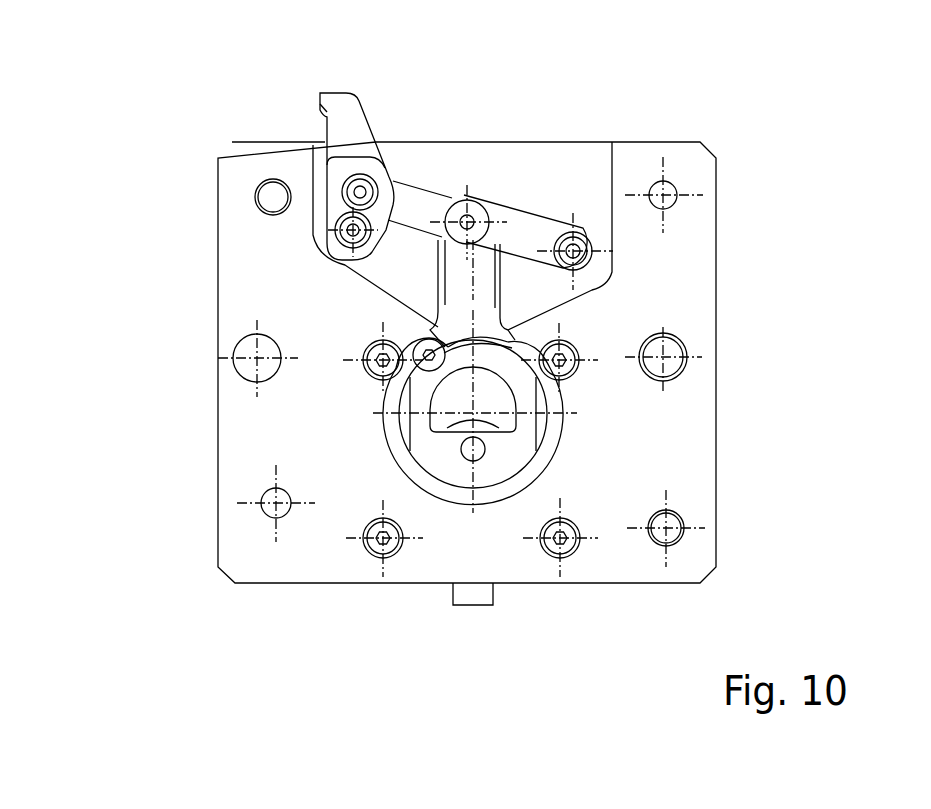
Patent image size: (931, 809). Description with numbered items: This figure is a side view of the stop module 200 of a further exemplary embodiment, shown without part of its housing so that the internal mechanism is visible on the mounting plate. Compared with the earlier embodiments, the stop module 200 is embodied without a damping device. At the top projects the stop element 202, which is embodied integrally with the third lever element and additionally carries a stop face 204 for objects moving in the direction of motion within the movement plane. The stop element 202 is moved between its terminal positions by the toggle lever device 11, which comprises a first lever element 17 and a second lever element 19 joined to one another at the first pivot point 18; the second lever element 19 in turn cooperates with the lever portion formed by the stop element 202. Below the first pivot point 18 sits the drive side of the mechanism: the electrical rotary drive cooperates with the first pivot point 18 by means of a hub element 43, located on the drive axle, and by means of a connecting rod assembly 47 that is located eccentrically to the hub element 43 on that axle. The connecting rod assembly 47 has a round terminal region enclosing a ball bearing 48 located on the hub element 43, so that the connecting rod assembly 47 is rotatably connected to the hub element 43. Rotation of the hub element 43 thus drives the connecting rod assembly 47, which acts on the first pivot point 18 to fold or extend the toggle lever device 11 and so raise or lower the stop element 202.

The stop module 200 is at (170, 140).
The stop element 202 is at (357, 97).
The stop face 204 is at (318, 112).
The second lever element 19 is at (415, 182).
The first pivot point 18 is at (472, 218).
The toggle lever device 11 is at (535, 212).
The first lever element 17 is at (555, 236).
The connecting rod assembly 47 is at (467, 286).
The ball bearing 48 is at (493, 348).
The hub element 43 is at (427, 433).